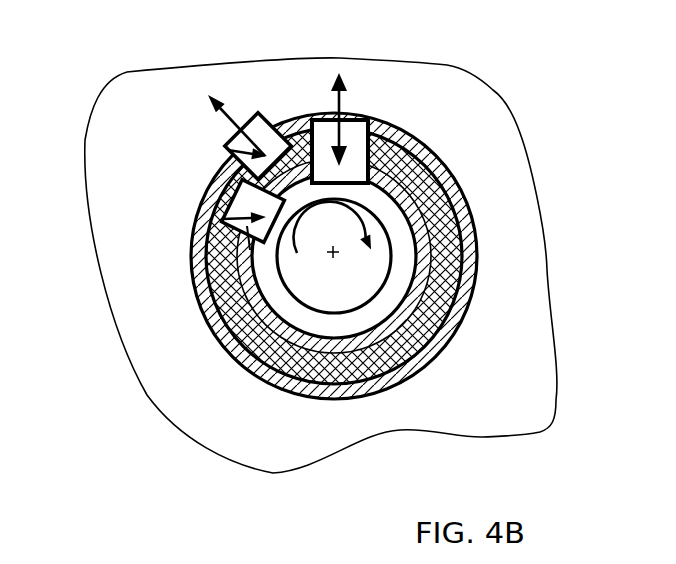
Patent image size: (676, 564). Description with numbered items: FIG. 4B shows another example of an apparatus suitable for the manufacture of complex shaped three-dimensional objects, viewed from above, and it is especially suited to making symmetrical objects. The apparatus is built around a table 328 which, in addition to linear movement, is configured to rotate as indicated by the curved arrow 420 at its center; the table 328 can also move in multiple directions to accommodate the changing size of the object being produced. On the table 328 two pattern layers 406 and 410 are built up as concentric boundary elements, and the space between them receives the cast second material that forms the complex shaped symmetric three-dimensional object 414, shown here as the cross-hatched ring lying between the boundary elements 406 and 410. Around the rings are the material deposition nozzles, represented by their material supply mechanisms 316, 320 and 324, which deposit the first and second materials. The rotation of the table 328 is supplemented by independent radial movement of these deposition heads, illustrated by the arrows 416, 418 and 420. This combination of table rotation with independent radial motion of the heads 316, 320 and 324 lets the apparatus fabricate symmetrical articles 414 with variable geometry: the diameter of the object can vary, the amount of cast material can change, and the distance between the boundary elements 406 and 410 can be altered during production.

The table 328 is at (147, 395).
The pattern layer 410 is at (198, 245).
The material supply mechanism 320 is at (203, 302).
The complex shaped symmetric 3D object 414 is at (357, 365).
The pattern layer 406 is at (410, 300).
The material supply mechanism 324 is at (358, 132).
The arrow of rotational movement 420 is at (305, 78).
The material supply mechanism 316 is at (226, 146).
The arrow of radial movement 418 is at (236, 110).
The arrow of radial movement 416 is at (201, 175).